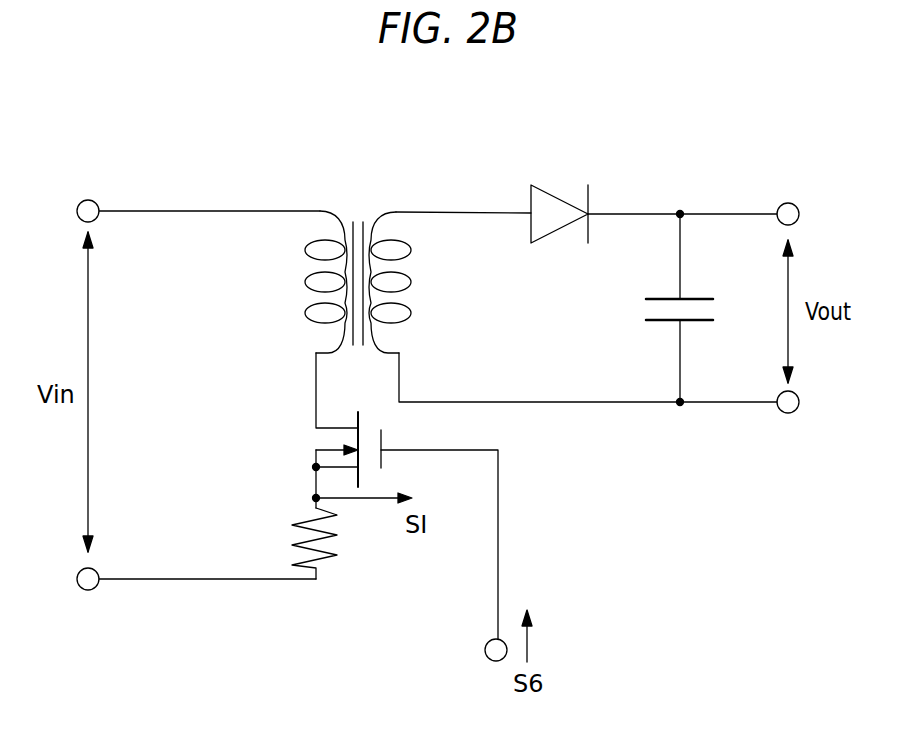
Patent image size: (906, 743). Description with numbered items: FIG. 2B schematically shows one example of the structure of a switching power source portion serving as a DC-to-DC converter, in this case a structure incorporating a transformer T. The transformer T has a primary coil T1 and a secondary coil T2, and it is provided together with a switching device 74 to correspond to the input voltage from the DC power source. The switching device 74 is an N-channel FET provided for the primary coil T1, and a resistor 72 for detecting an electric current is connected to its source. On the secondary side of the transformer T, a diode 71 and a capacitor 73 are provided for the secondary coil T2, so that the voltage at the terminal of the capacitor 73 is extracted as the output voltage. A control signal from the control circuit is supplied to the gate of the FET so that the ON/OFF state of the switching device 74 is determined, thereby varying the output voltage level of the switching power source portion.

The diode 71 is at (545, 191).
The resistor 72 is at (297, 543).
The capacitor 73 is at (697, 299).
The switching device 74 is at (362, 419).
The transformer T is at (438, 147).
The primary coil T1 is at (320, 210).
The secondary winding T2 is at (396, 211).